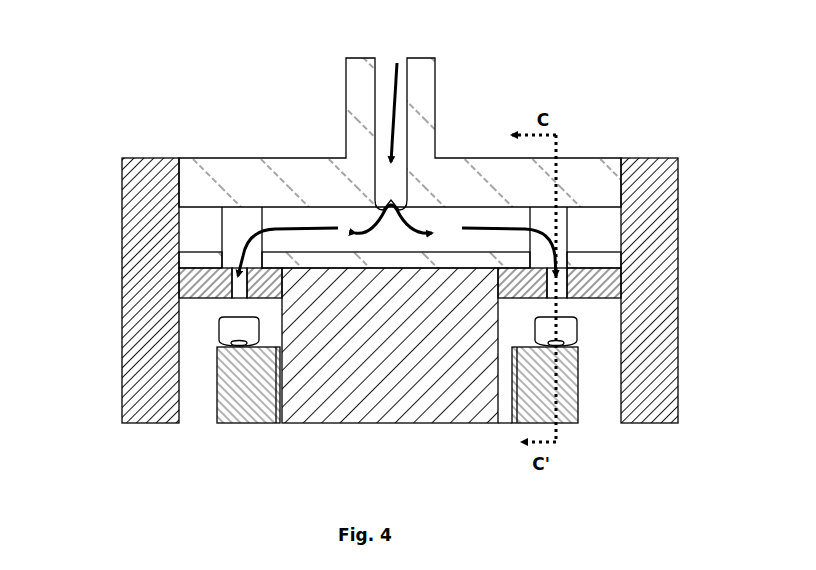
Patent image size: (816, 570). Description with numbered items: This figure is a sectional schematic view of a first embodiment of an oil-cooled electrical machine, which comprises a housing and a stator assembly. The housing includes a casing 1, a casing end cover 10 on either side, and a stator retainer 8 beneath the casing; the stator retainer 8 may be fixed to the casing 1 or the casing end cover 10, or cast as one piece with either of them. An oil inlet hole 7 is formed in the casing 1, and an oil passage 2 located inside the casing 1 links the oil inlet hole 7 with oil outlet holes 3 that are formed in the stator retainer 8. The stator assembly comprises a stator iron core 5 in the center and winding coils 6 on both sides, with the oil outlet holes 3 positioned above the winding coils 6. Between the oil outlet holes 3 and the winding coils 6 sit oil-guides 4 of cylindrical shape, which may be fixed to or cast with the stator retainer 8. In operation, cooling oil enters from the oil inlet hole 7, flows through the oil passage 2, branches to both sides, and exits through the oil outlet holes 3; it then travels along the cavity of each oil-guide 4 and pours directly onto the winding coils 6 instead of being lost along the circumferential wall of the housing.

The casing 1 is at (461, 250).
The oil passage 2 is at (243, 225).
The oil outlet holes 3 is at (233, 280).
The oil-guides 4 is at (222, 327).
The stator iron core 5 is at (402, 342).
The winding coils 6 is at (235, 395).
The oil inlet hole 7 is at (388, 58).
The stator retainer 8 is at (197, 292).
The casing end cover 10 is at (155, 405).